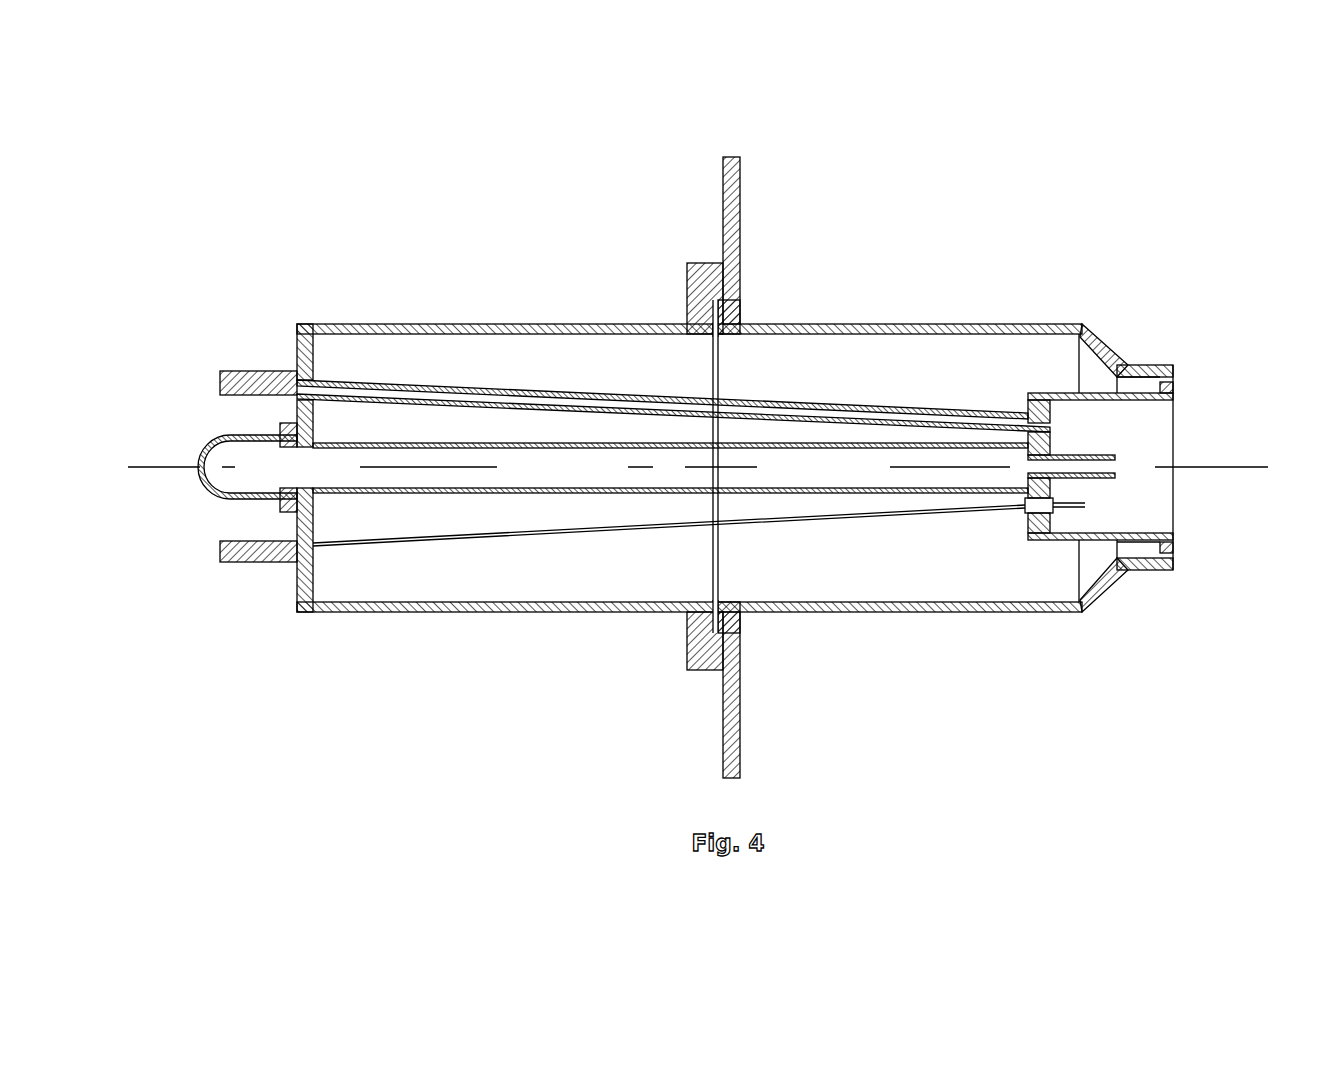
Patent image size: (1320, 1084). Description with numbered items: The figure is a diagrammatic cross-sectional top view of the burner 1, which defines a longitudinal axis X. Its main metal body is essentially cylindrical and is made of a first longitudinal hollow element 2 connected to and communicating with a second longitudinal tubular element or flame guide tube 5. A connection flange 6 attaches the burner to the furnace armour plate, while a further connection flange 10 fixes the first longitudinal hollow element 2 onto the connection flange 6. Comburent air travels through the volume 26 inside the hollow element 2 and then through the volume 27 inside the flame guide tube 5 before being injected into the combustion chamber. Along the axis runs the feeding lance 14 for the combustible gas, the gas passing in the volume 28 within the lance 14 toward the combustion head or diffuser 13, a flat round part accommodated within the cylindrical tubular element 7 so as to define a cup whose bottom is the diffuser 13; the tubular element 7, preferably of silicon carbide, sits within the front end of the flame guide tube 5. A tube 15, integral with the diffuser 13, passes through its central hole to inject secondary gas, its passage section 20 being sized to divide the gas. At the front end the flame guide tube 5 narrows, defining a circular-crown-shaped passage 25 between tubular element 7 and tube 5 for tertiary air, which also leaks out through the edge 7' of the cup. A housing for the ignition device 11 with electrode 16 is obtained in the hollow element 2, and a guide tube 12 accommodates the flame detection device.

The burner 1 is at (912, 268).
The first longitudinal hollow element 2 is at (400, 612).
The second longitudinal tubular element or flame guide tube 5 is at (996, 324).
The connection flange 6 is at (742, 190).
The cylindrical tubular element 7 is at (1104, 475).
The edge of the cup 7' is at (1198, 480).
The connection flange 10 is at (692, 282).
The ignition device 11 is at (257, 563).
The guide tube 12 is at (263, 372).
The combustion head or diffuser 13 is at (1053, 525).
The feeding lance 14 is at (467, 443).
The tube 15 is at (1120, 480).
The electrode 16 is at (490, 538).
The passage section 20 is at (1093, 457).
The circular-crown-shaped passage 25 is at (1135, 387).
The volume 26 is at (682, 468).
The volume 27 is at (981, 468).
The volume 28 is at (671, 467).
The longitudinal axis X is at (167, 467).